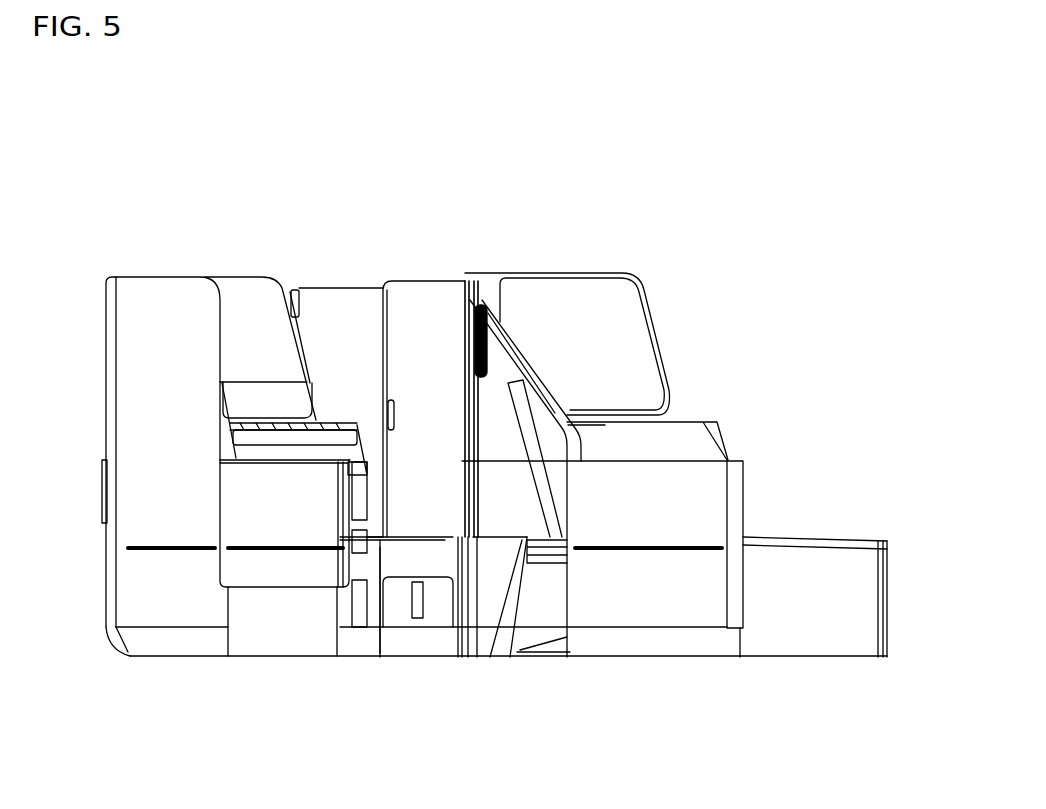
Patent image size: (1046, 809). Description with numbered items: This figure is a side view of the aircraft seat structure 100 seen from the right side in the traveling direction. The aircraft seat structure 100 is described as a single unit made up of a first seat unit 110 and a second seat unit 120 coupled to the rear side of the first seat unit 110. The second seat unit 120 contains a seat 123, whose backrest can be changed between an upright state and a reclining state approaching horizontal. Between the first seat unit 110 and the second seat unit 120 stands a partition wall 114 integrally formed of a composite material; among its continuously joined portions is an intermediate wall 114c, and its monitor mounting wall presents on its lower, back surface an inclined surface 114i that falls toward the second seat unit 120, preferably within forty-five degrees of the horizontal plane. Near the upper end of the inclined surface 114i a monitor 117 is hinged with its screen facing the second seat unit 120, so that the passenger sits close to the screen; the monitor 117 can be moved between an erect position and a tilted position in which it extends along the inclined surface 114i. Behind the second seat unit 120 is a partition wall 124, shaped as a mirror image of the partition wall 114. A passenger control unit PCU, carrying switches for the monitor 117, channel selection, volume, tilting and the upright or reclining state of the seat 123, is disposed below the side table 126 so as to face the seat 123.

The aircraft seat structure 100 is at (858, 242).
The first seat unit 110 is at (885, 680).
The second seat unit 120 is at (473, 680).
The passenger control unit PCU is at (278, 422).
The partition wall 124 is at (258, 297).
The side table 126 is at (331, 425).
The seat 123 is at (397, 410).
The monitor 117 is at (468, 345).
The partition wall 114 is at (608, 337).
The intermediate wall 114c is at (490, 390).
The inclined surface 114i is at (557, 403).